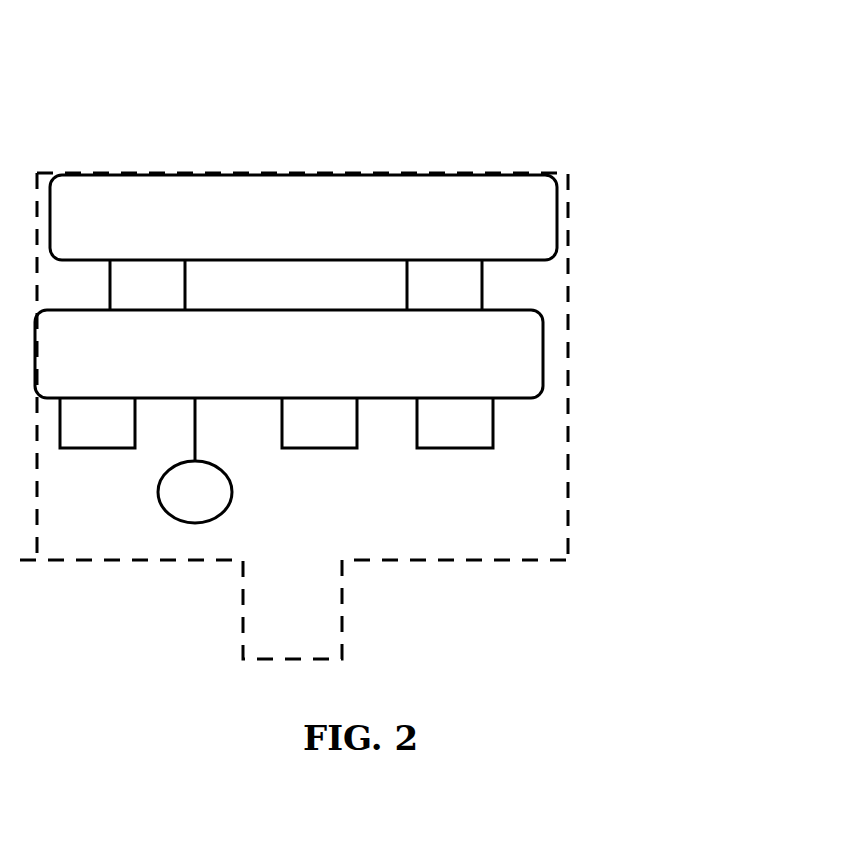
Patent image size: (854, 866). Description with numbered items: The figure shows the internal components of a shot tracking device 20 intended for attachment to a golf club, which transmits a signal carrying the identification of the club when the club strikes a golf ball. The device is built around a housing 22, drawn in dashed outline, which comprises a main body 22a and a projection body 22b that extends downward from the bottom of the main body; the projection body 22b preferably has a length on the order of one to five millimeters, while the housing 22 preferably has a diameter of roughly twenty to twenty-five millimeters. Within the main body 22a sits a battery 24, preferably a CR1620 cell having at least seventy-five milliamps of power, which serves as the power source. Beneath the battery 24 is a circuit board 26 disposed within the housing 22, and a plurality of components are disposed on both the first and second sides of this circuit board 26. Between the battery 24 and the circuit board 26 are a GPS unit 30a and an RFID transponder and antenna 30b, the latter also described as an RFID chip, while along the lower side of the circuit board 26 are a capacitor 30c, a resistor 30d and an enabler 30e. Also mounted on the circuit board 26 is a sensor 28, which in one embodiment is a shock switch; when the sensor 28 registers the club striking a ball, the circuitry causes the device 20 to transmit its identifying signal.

The shot tracking device 20 is at (474, 69).
The housing 22 is at (38, 173).
The main body 22a is at (568, 311).
The projection body 22b is at (242, 624).
The battery 24 is at (303, 217).
The circuit board 26 is at (289, 354).
The sensor 28 is at (195, 460).
The GPS unit 30a is at (147, 285).
The RFID transponder and antenna 30b is at (444, 285).
The capacitor 30c is at (97, 423).
The resistor 30d is at (319, 423).
The enabler 30e is at (455, 423).